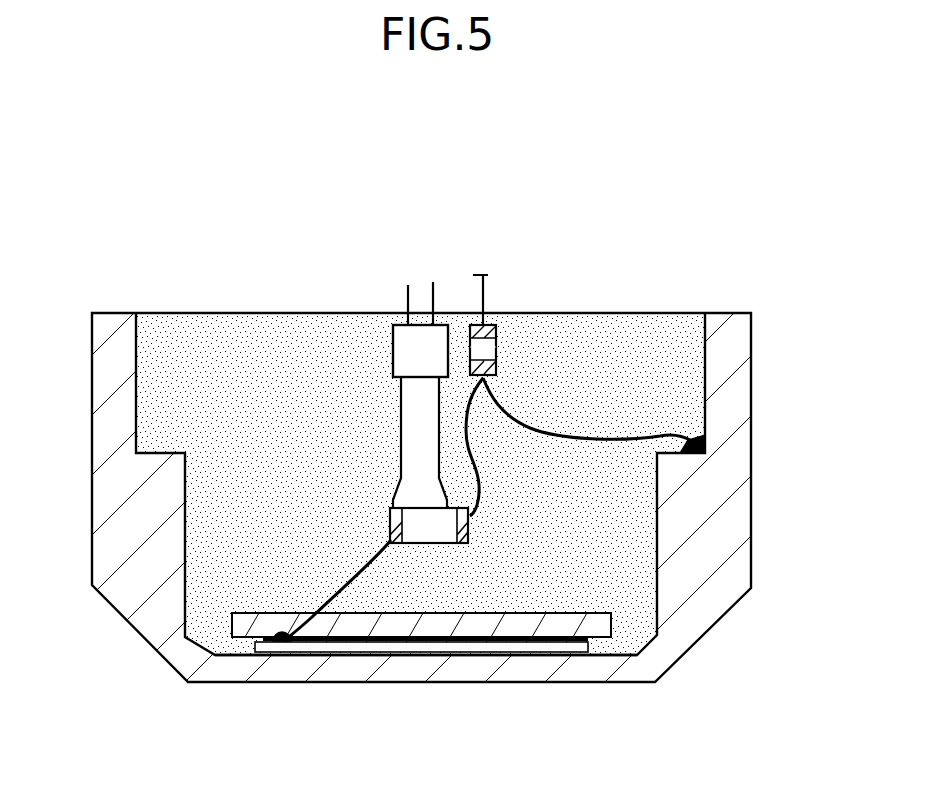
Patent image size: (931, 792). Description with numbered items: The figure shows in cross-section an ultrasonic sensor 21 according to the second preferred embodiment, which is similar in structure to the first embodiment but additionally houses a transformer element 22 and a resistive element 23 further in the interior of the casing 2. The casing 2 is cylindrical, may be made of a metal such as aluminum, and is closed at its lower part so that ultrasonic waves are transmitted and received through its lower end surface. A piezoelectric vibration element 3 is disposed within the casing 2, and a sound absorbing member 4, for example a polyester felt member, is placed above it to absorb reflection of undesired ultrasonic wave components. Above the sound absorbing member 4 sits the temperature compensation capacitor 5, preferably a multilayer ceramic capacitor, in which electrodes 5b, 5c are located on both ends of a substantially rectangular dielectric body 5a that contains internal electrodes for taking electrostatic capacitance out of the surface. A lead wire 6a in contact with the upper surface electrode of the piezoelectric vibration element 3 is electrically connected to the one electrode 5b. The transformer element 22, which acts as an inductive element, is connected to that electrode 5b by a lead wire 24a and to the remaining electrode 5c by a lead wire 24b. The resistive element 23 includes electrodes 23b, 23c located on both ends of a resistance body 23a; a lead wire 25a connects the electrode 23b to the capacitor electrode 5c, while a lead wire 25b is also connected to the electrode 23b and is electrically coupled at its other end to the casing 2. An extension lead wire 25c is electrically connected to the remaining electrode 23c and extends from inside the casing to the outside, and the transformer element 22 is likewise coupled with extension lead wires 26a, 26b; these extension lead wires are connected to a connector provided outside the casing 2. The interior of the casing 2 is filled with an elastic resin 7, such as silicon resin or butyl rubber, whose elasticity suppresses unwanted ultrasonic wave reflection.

The ultrasonic sensor 21 is at (124, 208).
The casing 2 is at (92, 553).
The piezoelectric vibration element 3 is at (256, 652).
The sound absorbing member 4 is at (637, 656).
The temperature compensation capacitor 5 is at (375, 501).
The dielectric body 5a is at (432, 528).
The electrode 5b is at (398, 545).
The electrode 5c is at (463, 547).
The lead wire 6a is at (326, 608).
The elastic resin 7 is at (620, 492).
The transformer element 22 is at (390, 324).
The resistive element 23 is at (597, 282).
The resistance body 23a is at (497, 348).
The electrode 23b is at (498, 370).
The electrode 23c is at (500, 330).
The lead wire 24a is at (393, 395).
The lead wire 24b is at (440, 392).
The lead wire 25a is at (482, 477).
The lead wire 25b is at (660, 433).
The extension lead wire 25c is at (488, 274).
The extension lead wire 26a is at (408, 285).
The extension lead wire 26b is at (433, 282).